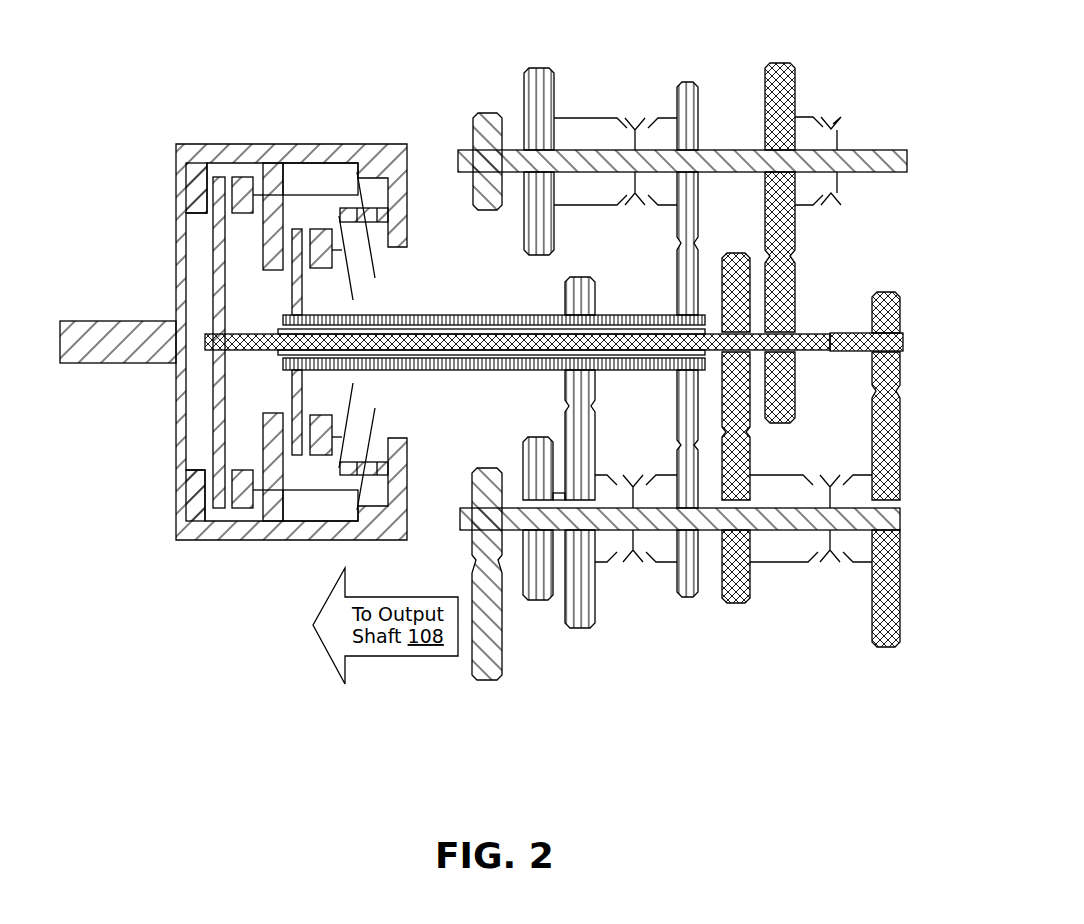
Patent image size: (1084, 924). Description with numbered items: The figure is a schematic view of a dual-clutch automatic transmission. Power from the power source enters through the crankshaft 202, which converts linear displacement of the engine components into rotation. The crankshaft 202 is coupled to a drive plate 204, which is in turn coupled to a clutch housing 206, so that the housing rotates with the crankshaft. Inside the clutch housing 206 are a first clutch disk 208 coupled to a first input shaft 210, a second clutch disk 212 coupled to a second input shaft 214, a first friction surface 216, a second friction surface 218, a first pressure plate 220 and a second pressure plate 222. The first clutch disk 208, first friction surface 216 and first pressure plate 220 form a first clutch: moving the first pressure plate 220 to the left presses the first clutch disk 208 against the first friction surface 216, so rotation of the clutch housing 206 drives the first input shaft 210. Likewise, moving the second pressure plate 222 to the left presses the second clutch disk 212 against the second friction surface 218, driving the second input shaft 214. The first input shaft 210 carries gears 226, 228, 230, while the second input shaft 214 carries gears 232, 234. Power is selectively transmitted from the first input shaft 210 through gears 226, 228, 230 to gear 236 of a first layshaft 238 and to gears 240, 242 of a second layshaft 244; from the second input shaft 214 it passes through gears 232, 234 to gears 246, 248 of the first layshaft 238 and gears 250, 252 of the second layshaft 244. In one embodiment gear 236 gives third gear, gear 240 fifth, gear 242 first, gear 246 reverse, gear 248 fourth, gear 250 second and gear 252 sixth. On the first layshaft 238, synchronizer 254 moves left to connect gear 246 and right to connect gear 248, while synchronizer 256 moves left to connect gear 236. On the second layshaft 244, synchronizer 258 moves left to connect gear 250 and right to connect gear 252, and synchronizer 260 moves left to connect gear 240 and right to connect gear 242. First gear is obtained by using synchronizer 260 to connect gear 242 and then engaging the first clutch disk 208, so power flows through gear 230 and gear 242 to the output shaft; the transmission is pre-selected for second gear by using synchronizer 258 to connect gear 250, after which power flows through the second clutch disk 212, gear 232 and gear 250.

The crankshaft 202 is at (105, 330).
The drive plate 204 is at (176, 165).
The clutch housing 206 is at (320, 232).
The first clutch disk 208 is at (213, 240).
The first input shaft 210 is at (268, 334).
The second clutch disk 212 is at (298, 275).
The second input shaft 214 is at (412, 315).
The first friction surface 216 is at (197, 192).
The second friction surface 218 is at (282, 225).
The first pressure plate 220 is at (243, 192).
The second pressure plate 222 is at (357, 172).
The gear 226 is at (738, 285).
The gear 228 is at (787, 287).
The gear 230 is at (886, 295).
The gear 232 is at (568, 305).
The gear 234 is at (680, 290).
The gear 236 is at (781, 75).
The first layshaft 238 is at (888, 170).
The gear 240 is at (737, 595).
The gear 242 is at (882, 637).
The second layshaft 244 is at (893, 520).
The gear 246 is at (543, 76).
The gear 248 is at (690, 95).
The gear 250 is at (578, 618).
The gear 252 is at (692, 587).
The synchronizer 254 is at (632, 131).
The synchronizer 256 is at (842, 140).
The synchronizer 258 is at (630, 492).
The synchronizer 260 is at (820, 490).